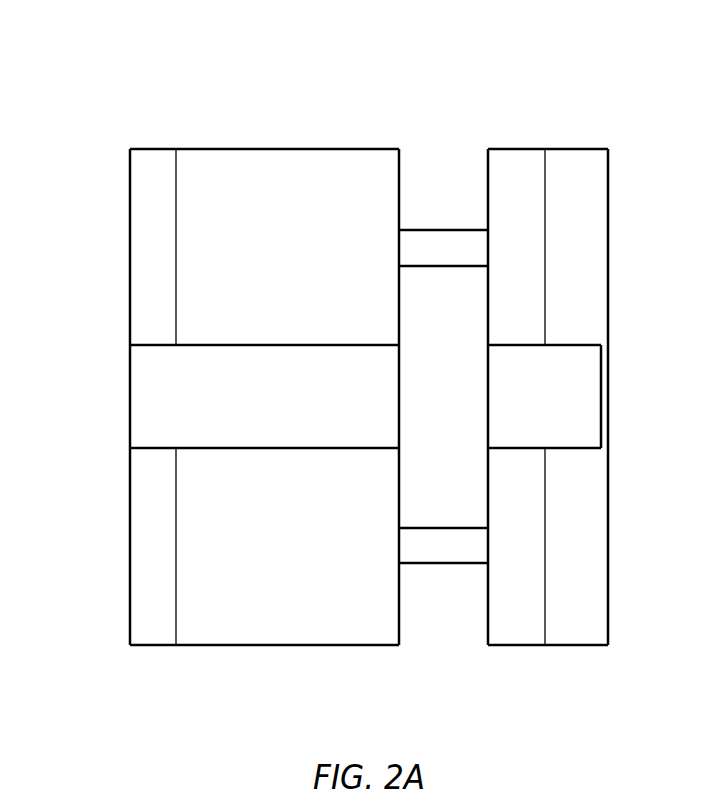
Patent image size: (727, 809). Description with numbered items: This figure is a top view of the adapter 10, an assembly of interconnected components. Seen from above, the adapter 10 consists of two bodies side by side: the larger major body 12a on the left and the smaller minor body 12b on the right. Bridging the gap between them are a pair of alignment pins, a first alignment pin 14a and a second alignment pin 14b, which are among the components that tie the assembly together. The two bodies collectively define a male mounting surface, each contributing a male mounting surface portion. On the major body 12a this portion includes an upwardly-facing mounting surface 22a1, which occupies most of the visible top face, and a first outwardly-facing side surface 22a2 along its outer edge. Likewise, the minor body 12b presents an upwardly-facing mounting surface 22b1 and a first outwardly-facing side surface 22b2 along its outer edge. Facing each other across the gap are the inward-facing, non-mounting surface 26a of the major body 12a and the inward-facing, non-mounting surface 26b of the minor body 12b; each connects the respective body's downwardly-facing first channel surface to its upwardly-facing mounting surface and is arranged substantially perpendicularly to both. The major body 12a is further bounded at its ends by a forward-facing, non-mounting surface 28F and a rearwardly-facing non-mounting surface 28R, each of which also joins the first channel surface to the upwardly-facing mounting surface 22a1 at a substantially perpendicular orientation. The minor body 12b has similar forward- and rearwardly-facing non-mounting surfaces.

The adapter 10 is at (70, 73).
The major body 12a is at (112, 560).
The minor body 12b is at (624, 560).
The first alignment pin 14a is at (467, 514).
The second alignment pin 14b is at (448, 216).
The upwardly-facing mounting surface 22a1 is at (282, 257).
The first outwardly-facing side surface 22a2 is at (150, 255).
The upwardly-facing mounting surface 22b1 is at (508, 163).
The first outwardly-facing side surface 22b2 is at (586, 163).
The inward-facing, non-mounting surface 26a is at (400, 626).
The inward-facing, non-mounting surface 26b is at (488, 626).
The forward-facing, non-mounting surface 28F is at (248, 646).
The rearwardly-facing non-mounting surface 28R is at (246, 149).